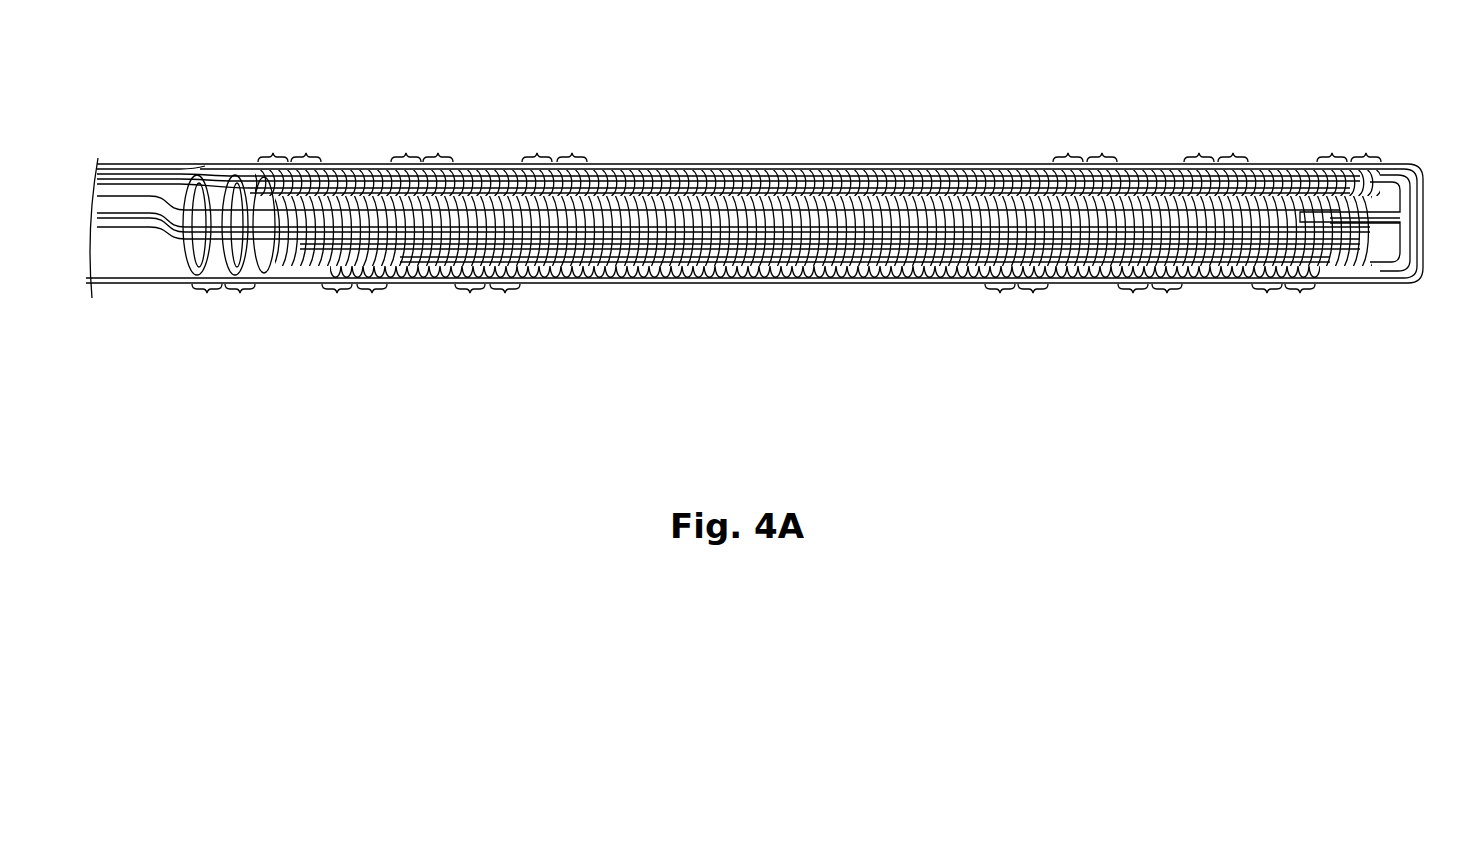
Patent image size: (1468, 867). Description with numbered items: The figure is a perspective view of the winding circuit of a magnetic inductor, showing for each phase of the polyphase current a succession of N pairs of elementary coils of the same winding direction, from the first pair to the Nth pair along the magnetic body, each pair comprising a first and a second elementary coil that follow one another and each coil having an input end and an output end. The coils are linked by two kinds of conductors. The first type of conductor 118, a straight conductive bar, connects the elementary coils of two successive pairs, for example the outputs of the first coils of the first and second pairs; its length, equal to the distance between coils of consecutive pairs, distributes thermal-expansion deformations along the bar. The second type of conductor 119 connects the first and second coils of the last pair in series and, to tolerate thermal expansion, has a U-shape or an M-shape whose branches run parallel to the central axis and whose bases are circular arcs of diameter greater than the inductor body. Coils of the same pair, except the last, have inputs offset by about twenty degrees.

The first type of conductor 118 is at (366, 163).
The second type of conductor 119 is at (1421, 215).